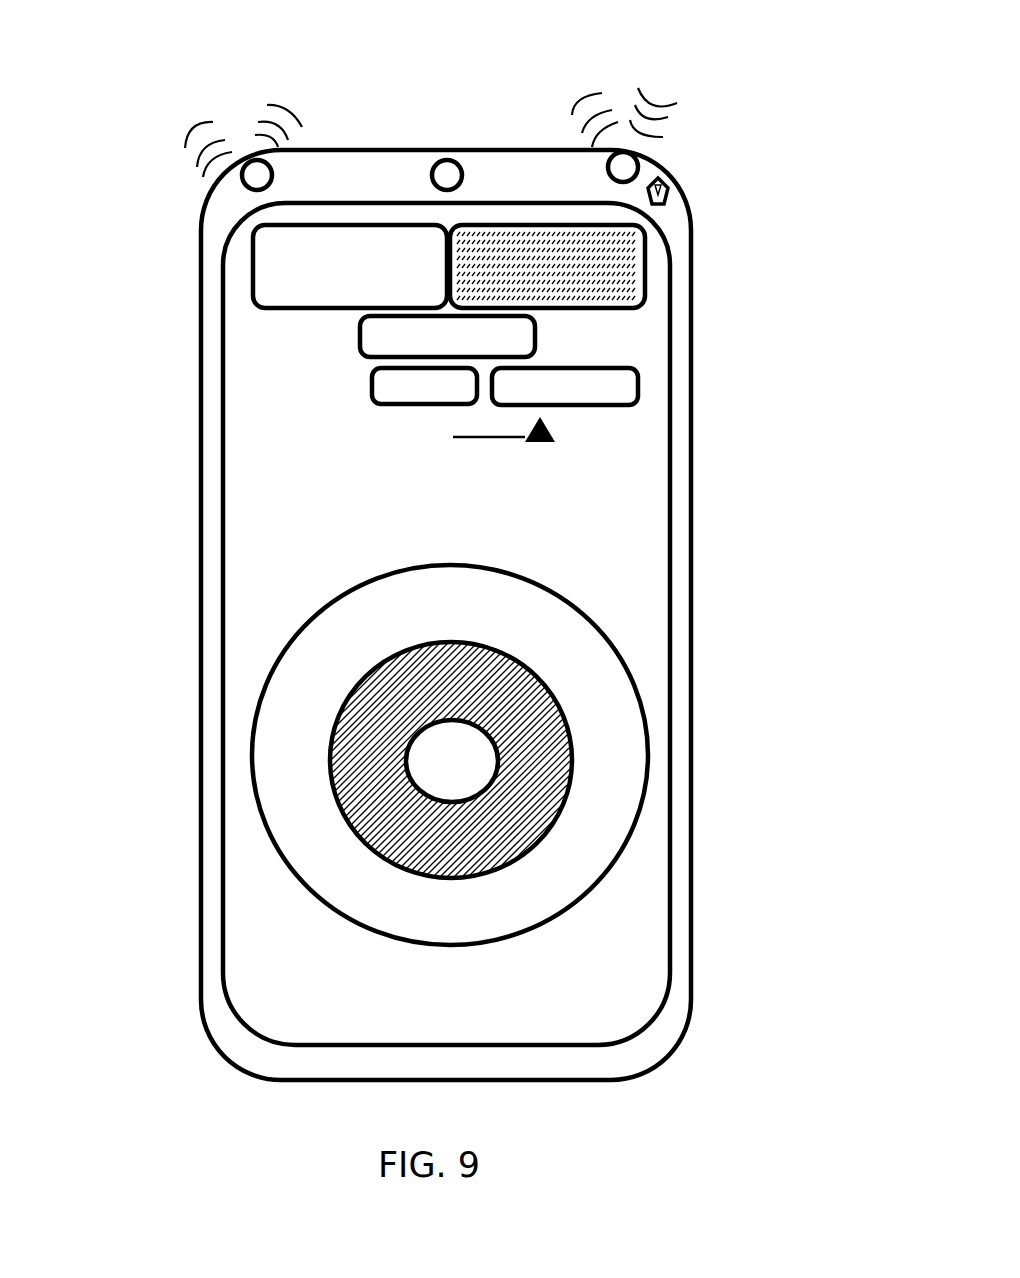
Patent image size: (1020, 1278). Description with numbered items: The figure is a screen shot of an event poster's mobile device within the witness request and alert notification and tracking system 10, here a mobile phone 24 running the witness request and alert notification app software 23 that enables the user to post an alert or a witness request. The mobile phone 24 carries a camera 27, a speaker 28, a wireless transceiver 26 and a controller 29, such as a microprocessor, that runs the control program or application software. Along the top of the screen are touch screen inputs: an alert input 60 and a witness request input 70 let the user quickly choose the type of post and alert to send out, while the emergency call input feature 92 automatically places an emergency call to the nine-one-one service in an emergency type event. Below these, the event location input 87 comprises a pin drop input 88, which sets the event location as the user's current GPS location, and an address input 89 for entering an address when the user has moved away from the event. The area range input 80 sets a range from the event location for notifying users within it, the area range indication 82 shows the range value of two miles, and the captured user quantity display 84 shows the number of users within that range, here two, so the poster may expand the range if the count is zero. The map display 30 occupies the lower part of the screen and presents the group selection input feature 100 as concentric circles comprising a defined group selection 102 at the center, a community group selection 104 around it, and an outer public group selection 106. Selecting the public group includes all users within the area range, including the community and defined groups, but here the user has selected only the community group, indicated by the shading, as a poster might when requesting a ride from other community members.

The witness request and alert notification and tracking system 10 is at (759, 288).
The witness request and alert notification app software 23 is at (664, 194).
The mobile phone 24 is at (230, 212).
The wireless transceiver 26 is at (618, 166).
The camera 27 is at (447, 175).
The speaker 28 is at (258, 175).
The controller 29 is at (664, 189).
The map display 30 is at (436, 585).
The alert input 60 is at (227, 228).
The witness request input 70 is at (600, 280).
The area range input 80 is at (598, 437).
The area range indication 82 is at (252, 428).
The captured user quantity display 84 is at (252, 467).
The event location input 87 is at (242, 383).
The pin drop input 88 is at (387, 383).
The address input 89 is at (625, 387).
The 911 call input feature 92 is at (507, 347).
The group selection input feature 100 is at (585, 608).
The defined group selection 102 is at (470, 784).
The community group selection 104 is at (538, 734).
The public group selection 106 is at (560, 670).